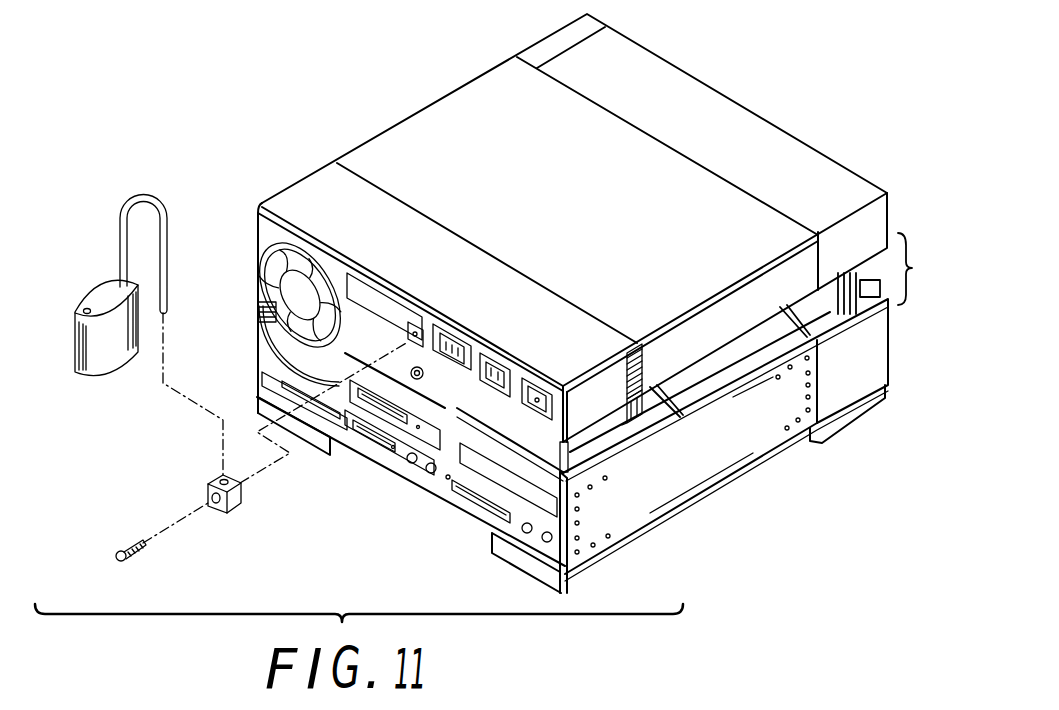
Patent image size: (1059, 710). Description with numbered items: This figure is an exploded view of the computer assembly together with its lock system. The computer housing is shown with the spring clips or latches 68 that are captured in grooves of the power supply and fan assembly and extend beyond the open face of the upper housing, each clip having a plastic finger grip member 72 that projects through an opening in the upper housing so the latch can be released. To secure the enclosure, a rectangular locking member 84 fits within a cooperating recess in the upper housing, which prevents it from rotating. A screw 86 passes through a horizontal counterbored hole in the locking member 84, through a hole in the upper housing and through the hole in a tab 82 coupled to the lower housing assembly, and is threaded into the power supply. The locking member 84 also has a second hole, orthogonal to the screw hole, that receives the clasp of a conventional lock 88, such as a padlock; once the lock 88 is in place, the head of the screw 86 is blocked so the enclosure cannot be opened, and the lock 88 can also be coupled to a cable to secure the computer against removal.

The spring clips or latches 68 is at (642, 417).
The plastic finger grip member 72 is at (643, 368).
The tab 82 is at (425, 382).
The rectangular locking member 84 is at (235, 500).
The screw 86 is at (137, 543).
The lock 88 is at (103, 367).